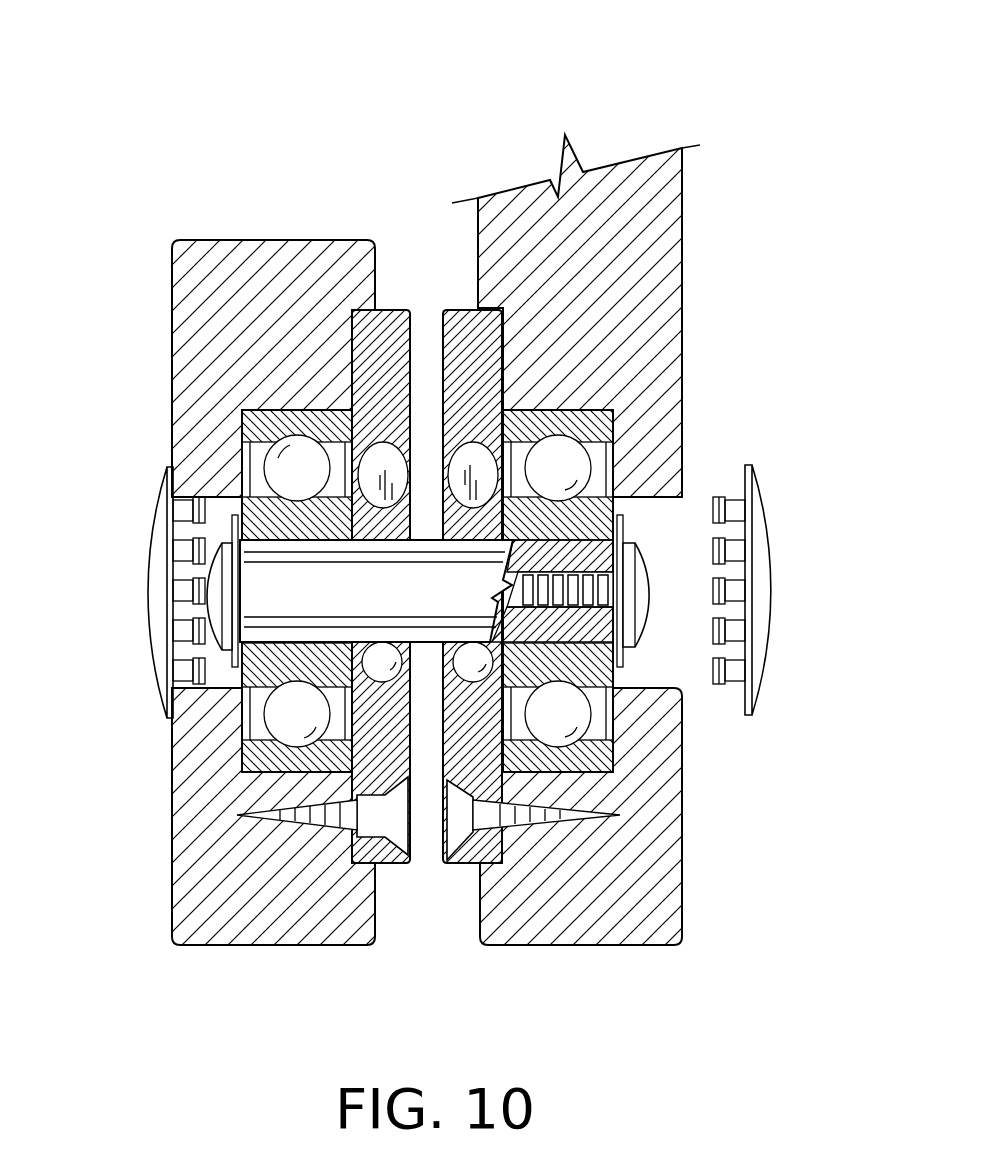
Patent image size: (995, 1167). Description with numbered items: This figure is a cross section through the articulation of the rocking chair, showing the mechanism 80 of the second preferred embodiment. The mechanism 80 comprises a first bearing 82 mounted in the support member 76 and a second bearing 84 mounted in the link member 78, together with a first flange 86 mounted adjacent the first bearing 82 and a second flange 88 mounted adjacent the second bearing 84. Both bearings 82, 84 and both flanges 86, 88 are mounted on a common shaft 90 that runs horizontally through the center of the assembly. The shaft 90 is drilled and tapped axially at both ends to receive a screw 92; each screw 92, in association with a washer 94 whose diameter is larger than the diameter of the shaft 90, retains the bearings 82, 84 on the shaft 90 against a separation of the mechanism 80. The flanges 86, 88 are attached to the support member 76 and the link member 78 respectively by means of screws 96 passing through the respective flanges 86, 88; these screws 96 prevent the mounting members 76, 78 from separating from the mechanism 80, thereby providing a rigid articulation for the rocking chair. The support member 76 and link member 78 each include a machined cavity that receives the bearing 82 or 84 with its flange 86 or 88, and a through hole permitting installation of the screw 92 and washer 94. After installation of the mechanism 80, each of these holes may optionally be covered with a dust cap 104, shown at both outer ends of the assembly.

The support member 76 is at (172, 283).
The link member 78 is at (682, 232).
The mechanism 80 is at (369, 90).
The first bearing 82 is at (242, 410).
The second bearing 84 is at (615, 433).
The first flange 86 is at (397, 307).
The second flange 88 is at (453, 307).
The shaft 90 is at (260, 602).
The screw 92 is at (218, 587).
The washer 94 is at (623, 527).
The screws 96 is at (467, 823).
The dust cap 104 is at (155, 535).